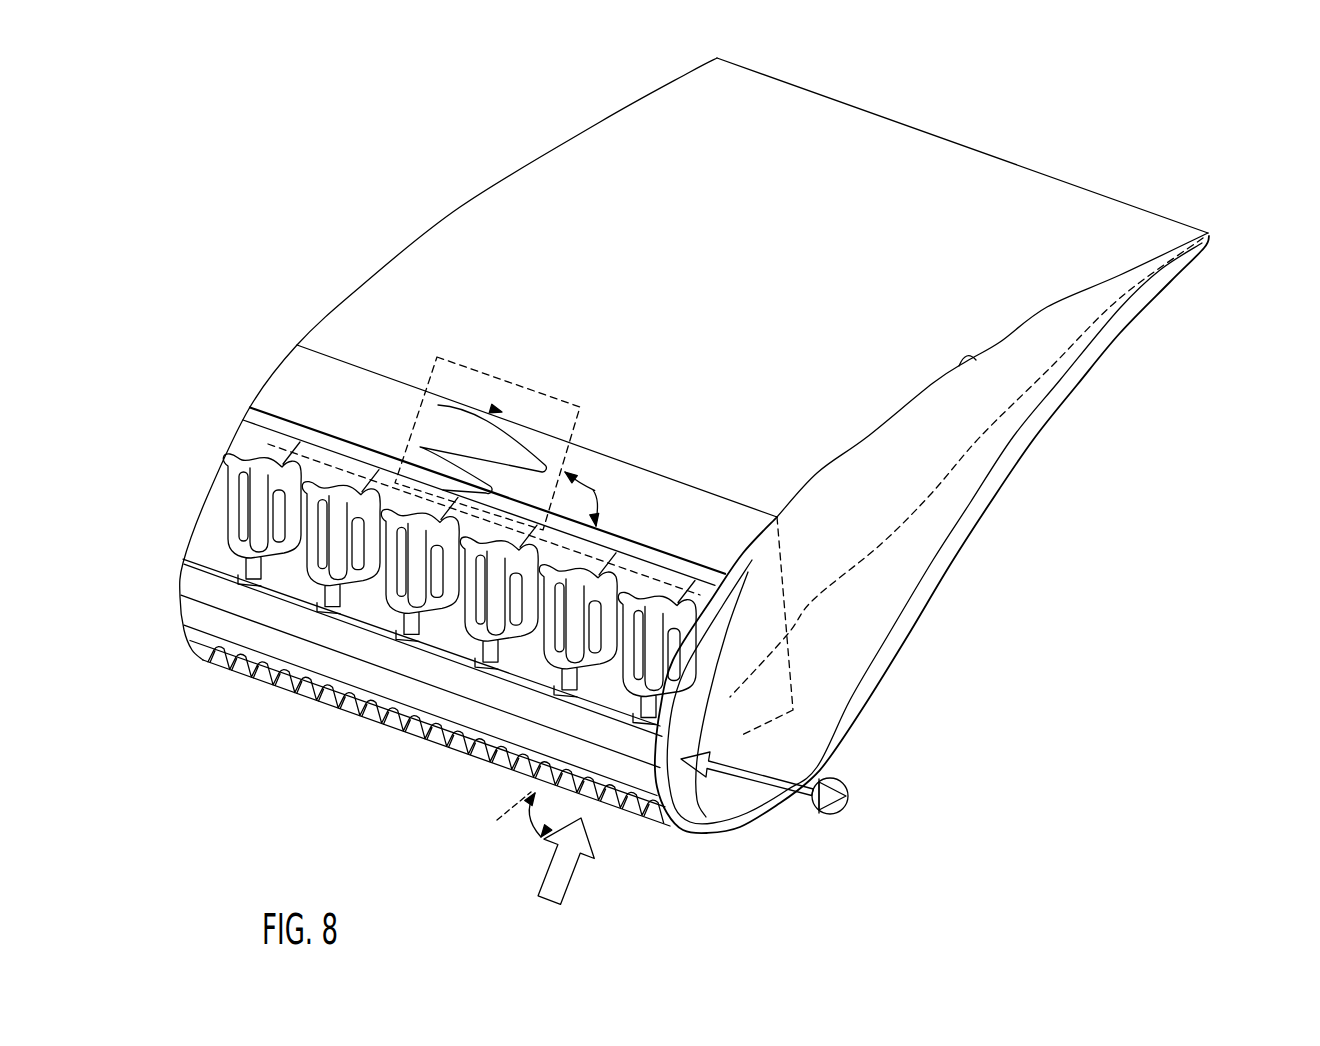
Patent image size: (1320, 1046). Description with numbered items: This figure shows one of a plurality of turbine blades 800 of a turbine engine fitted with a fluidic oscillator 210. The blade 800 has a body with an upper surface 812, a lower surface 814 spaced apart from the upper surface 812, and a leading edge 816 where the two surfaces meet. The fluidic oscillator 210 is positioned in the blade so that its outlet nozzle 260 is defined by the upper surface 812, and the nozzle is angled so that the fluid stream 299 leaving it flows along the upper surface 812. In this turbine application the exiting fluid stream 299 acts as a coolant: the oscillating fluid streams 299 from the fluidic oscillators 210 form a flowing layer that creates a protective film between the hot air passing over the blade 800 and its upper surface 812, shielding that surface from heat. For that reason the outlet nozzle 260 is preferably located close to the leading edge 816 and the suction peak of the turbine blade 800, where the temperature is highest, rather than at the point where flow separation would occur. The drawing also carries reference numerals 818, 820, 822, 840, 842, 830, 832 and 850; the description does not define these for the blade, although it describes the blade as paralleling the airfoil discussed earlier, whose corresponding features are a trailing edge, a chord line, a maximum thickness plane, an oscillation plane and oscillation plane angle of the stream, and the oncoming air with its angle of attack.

The turbine blade 800 is at (899, 88).
The rear edge of cover panel 818 is at (1222, 229).
The lower surface 814 is at (960, 550).
The hidden channel line 820 is at (1078, 383).
The upper surface 812 is at (975, 364).
The internal cavity 822 is at (793, 710).
The outlet nozzle 260 is at (290, 428).
The fluid stream 299 is at (463, 398).
The region of interest 840 is at (565, 412).
The direction of movement 842 is at (600, 491).
The fluidic oscillator 210 is at (213, 495).
The leading edge 816 is at (175, 567).
The airflow arrow 830 is at (578, 868).
The oscillation direction 832 is at (523, 820).
The pump 850 is at (848, 797).